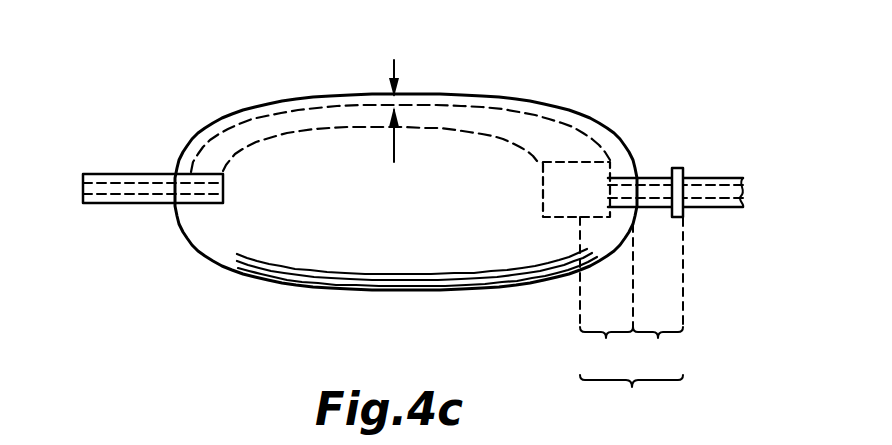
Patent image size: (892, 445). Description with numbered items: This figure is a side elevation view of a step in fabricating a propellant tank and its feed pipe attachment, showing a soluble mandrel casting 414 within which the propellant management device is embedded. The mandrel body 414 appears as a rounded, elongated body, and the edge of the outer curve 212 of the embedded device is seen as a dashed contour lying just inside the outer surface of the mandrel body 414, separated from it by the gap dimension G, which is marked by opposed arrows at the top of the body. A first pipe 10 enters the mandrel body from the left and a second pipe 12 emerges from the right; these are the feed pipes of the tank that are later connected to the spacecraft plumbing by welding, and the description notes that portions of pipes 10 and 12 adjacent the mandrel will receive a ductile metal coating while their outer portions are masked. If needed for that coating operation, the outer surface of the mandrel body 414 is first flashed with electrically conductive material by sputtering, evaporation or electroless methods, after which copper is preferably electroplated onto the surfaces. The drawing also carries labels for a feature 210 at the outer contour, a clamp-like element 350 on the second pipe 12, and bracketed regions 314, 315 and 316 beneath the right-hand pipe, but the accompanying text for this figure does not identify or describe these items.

The pipe 10 is at (124, 204).
The pipe 12 is at (715, 210).
The sealed balloon body 210 is at (620, 153).
The outer curve 212 is at (544, 118).
The connection region 314 is at (631, 402).
The first segment of connection region 315 is at (606, 298).
The second segment of connection region 316 is at (658, 298).
The clamp 350 is at (680, 168).
The soluble mandrel casting 414 is at (224, 272).
The gap dimension G is at (394, 128).